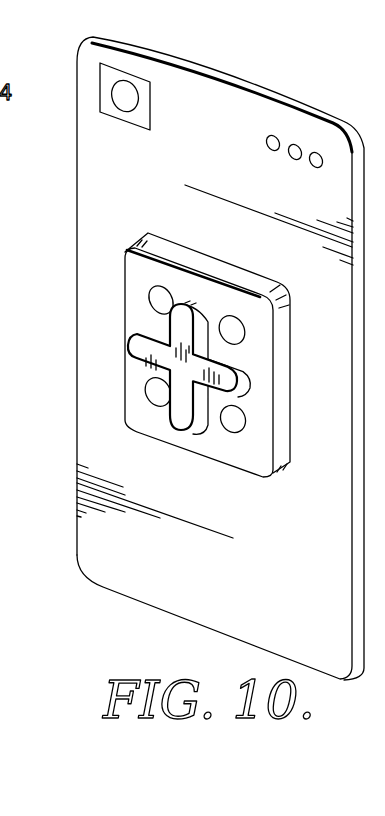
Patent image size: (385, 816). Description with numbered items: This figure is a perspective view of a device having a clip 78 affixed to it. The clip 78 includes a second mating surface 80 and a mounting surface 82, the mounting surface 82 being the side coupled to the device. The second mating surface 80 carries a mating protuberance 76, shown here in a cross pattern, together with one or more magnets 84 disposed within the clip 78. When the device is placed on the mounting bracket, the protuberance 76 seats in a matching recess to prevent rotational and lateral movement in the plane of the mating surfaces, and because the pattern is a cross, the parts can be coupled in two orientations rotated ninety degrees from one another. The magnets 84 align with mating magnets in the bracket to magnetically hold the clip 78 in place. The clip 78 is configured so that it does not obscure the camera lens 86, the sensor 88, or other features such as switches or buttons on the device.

The protuberance 76 is at (177, 420).
The clip 78 is at (233, 372).
The second mating surface 80 is at (262, 392).
The mounting surface 82 is at (233, 355).
The magnets 84 is at (221, 317).
The camera lens 86 is at (122, 98).
The sensor 88 is at (270, 140).